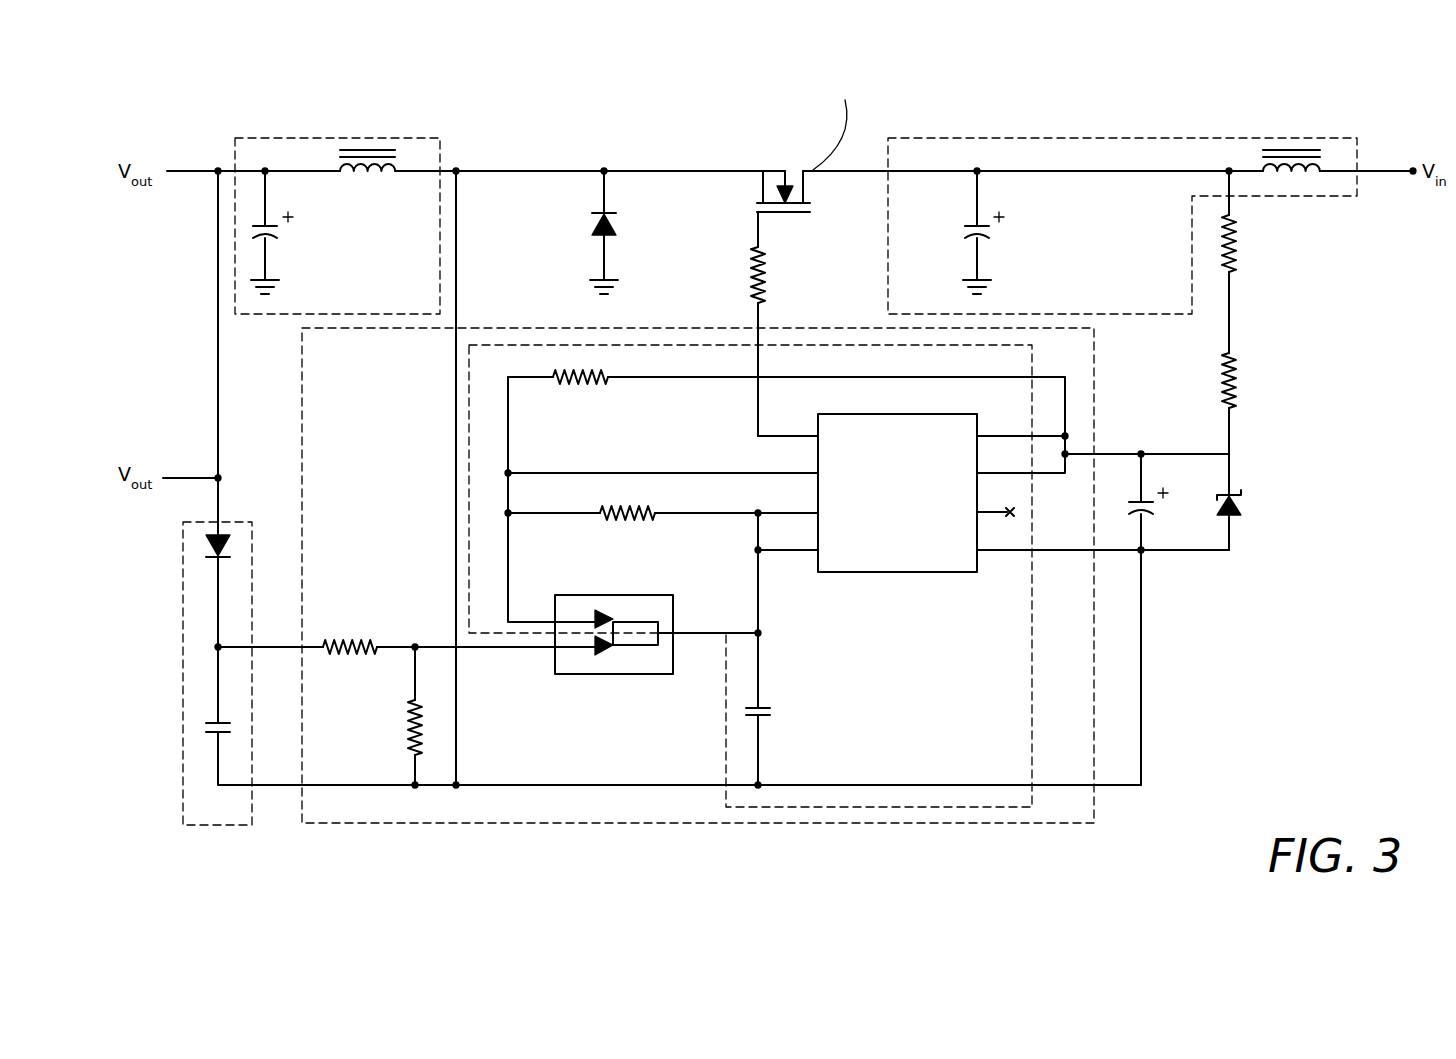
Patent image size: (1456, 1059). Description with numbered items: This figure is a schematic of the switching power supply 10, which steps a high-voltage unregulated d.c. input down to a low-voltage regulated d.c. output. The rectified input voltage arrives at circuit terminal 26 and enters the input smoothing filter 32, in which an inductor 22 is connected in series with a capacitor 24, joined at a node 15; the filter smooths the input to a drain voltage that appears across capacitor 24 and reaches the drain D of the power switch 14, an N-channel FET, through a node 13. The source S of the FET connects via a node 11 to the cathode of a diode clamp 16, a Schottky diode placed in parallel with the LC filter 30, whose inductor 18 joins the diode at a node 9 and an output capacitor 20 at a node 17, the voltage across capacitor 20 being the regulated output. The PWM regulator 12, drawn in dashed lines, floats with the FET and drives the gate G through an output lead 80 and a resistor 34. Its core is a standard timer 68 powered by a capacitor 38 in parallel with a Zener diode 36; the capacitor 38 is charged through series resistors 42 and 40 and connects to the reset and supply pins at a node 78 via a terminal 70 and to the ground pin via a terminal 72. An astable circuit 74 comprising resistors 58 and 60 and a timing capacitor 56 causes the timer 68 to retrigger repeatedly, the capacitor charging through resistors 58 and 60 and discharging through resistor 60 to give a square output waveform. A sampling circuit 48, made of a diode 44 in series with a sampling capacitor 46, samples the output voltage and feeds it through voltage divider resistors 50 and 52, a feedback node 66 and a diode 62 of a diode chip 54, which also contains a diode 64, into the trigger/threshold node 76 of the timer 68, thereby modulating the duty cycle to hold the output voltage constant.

The node 9 is at (456, 171).
The switching power supply 10 is at (1340, 458).
The node 11 is at (604, 171).
The PWM regulator 12 is at (995, 823).
The node 13 is at (977, 171).
The power switch 14 is at (793, 168).
The node 15 is at (1229, 171).
The diode clamp 16 is at (594, 222).
The node 17 is at (265, 168).
The inductor 18 is at (368, 150).
The output capacitor 20 is at (278, 230).
The inductor 22 is at (1295, 150).
The capacitor 24 is at (987, 240).
The circuit terminal 26 is at (1388, 178).
The LC filter 30 is at (248, 157).
The input smoothing filter 32 is at (1020, 152).
The resistor 34 is at (766, 285).
The Zener diode 36 is at (1240, 515).
The capacitor 38 is at (1152, 510).
The resistor 40 is at (1236, 375).
The resistor 42 is at (1236, 240).
The diode 44 is at (210, 545).
The sampling capacitor 46 is at (210, 722).
The sampling circuit 48 is at (183, 645).
The voltage divider resistor 50 is at (347, 647).
The voltage divider resistor 52 is at (410, 718).
The diode chip 54 is at (650, 675).
The timing capacitor 56 is at (766, 710).
The resistor 58 is at (568, 378).
The resistor 60 is at (615, 512).
The diode 62 is at (598, 656).
The diode 64 is at (605, 612).
The feedback node 66 is at (415, 647).
The 555 timer 68 is at (957, 573).
The terminal 70 is at (1118, 453).
The terminal 72 is at (1110, 552).
The astable circuit 74 is at (785, 807).
The trigger/threshold node 76 is at (760, 552).
The node 78 is at (1068, 458).
The output lead 80 is at (757, 318).